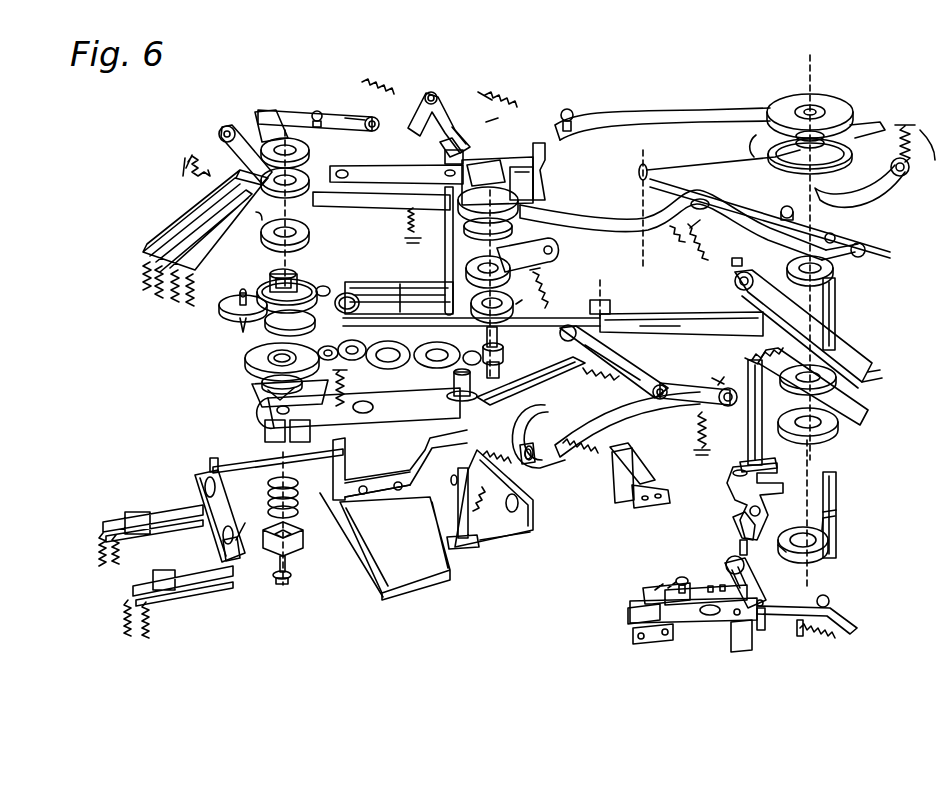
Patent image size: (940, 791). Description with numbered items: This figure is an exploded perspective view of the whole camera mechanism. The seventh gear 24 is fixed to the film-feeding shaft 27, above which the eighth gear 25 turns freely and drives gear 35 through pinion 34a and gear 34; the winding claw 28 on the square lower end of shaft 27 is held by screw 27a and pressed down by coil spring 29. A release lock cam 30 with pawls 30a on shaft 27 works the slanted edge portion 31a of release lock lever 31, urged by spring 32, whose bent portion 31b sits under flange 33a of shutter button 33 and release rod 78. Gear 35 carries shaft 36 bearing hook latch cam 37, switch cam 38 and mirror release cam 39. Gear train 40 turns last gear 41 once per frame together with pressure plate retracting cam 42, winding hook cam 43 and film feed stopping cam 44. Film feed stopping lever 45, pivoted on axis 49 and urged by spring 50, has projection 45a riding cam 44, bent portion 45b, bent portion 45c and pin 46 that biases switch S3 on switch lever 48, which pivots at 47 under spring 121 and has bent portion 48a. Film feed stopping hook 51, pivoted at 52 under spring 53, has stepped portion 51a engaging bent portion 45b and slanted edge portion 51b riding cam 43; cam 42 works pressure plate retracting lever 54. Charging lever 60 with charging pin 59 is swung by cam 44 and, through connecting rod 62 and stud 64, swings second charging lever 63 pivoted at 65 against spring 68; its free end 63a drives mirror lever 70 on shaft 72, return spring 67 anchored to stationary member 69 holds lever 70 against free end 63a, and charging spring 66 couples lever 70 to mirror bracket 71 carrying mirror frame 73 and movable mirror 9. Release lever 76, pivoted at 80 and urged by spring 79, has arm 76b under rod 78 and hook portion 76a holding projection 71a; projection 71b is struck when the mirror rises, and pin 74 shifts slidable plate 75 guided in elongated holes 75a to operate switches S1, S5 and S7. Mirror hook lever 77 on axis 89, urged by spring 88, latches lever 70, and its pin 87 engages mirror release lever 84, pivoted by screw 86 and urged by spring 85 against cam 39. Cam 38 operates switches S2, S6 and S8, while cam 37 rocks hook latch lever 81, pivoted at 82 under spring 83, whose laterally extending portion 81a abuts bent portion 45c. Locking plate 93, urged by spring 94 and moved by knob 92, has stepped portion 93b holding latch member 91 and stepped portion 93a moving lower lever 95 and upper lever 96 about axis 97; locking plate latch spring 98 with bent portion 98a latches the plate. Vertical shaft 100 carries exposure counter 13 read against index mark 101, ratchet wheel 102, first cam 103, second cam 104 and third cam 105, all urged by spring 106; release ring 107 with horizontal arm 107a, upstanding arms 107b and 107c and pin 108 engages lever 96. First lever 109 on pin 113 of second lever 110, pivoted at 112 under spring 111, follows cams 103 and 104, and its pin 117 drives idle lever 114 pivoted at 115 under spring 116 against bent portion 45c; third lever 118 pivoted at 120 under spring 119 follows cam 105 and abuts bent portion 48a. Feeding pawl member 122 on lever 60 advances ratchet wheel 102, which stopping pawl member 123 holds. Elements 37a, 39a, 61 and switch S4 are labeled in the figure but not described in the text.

The base plate 9 is at (440, 592).
The hub disc 13 is at (835, 110).
The ring gear 24 is at (250, 368).
The hub 25 is at (256, 346).
The bushing 27 is at (268, 436).
The washer 27a is at (275, 586).
The screw 28 is at (293, 572).
The nut 29 is at (303, 537).
The gear 30 is at (262, 388).
The post 30a is at (302, 432).
The lever 31 is at (400, 403).
The bracket 31a is at (262, 406).
The gear train 31b is at (452, 370).
The spring 32 is at (346, 388).
The plate 33 is at (480, 392).
The loop 33a is at (540, 413).
The pin 34 is at (215, 310).
The gear 34a is at (240, 320).
The cap 35 is at (272, 280).
The gear 36 is at (312, 290).
The ring 37 is at (302, 242).
The tab 37a is at (264, 228).
The ring 38 is at (312, 180).
The ring 39 is at (256, 138).
The tab 39a is at (272, 134).
The bar 40 is at (430, 322).
The pin 41 is at (502, 366).
The pin 42 is at (486, 330).
The rings 43 is at (466, 268).
The cam 44 is at (486, 220).
The post 45 is at (445, 240).
The plate 45a is at (512, 158).
The block 45b is at (548, 170).
The tab 45c is at (462, 144).
The block 46 is at (445, 272).
The pinion 47 is at (328, 348).
The lever 48 is at (616, 316).
The bar 48a is at (690, 318).
The bar 49 is at (385, 172).
The spring 50 is at (412, 224).
The curved lever 51 is at (592, 211).
The lever edge 51a is at (560, 186).
The ring 51b is at (504, 234).
The hook 52 is at (558, 248).
The hook 53 is at (556, 280).
The pinion 54 is at (497, 345).
The plate 59 is at (542, 162).
The screw 60 is at (563, 114).
The arm 61 is at (578, 149).
The lever 62 is at (620, 368).
The lever 63 is at (700, 388).
The spring 63a is at (572, 447).
The spring 64 is at (662, 362).
The tab 65 is at (722, 386).
The spring 66 is at (520, 470).
The arc 67 is at (600, 422).
The spring 68 is at (700, 430).
The bracket 69 is at (636, 505).
The block 70 is at (578, 482).
The post 71 is at (462, 548).
The hole 71a is at (454, 484).
The frame bar 71b is at (408, 470).
The spring 72 is at (298, 497).
The plate 73 is at (382, 600).
The rod 74 is at (215, 456).
The plate 75 is at (222, 506).
The tab 75a is at (195, 476).
The bracket 76 is at (532, 536).
The frame 76a is at (410, 440).
The flange 76b is at (512, 546).
The hook lever 77 is at (386, 92).
The spring 78 is at (475, 548).
The hole 79 is at (506, 510).
The edge 80 is at (536, 512).
The bar 81 is at (318, 207).
The block 81a is at (452, 156).
The lever 82 is at (222, 126).
The lever 83 is at (208, 160).
The lever 84 is at (300, 114).
The screw 85 is at (320, 124).
The arm 86 is at (338, 118).
The arm 87 is at (447, 128).
The spring 88 is at (372, 84).
The pivot 89 is at (432, 93).
The piece 91 is at (648, 597).
The tab 92 is at (742, 648).
The bar 93 is at (705, 596).
The pin 93a is at (763, 628).
The bar end 93b is at (630, 611).
The arm spring 94 is at (830, 633).
The lever 95 is at (762, 592).
The bracket 96 is at (770, 500).
The pin 97 is at (740, 542).
The screw 98 is at (676, 578).
The strip 98a is at (680, 630).
The arm 100 is at (818, 212).
The shaft 101 is at (815, 100).
The ratchet gear 102 is at (790, 156).
The ring 103 is at (838, 270).
The ring 104 is at (840, 382).
The ring 105 is at (840, 432).
The rod 106 is at (712, 163).
The ring 107 is at (815, 552).
The tab 107a is at (776, 548).
The plate 107b is at (836, 480).
The plate 107c is at (838, 512).
The hook 108 is at (735, 515).
The bar 109 is at (862, 241).
The arm 110 is at (845, 338).
The arm 111 is at (755, 282).
The piece 112 is at (735, 262).
The post 113 is at (838, 300).
The spring 114 is at (700, 242).
The bushing 115 is at (645, 178).
The spring 116 is at (685, 236).
The arm 117 is at (784, 208).
The arm 118 is at (862, 416).
The post 119 is at (760, 398).
The bar 120 is at (735, 318).
The block 121 is at (592, 326).
The arm 122 is at (652, 112).
The spring 123 is at (905, 185).
The spring S1 is at (163, 619).
The spring S2 is at (209, 273).
The spring S3 is at (363, 284).
The spring S4 is at (585, 378).
The spring S5 is at (183, 575).
The spring S6 is at (174, 322).
The spring S7 is at (151, 523).
The spring S8 is at (144, 310).